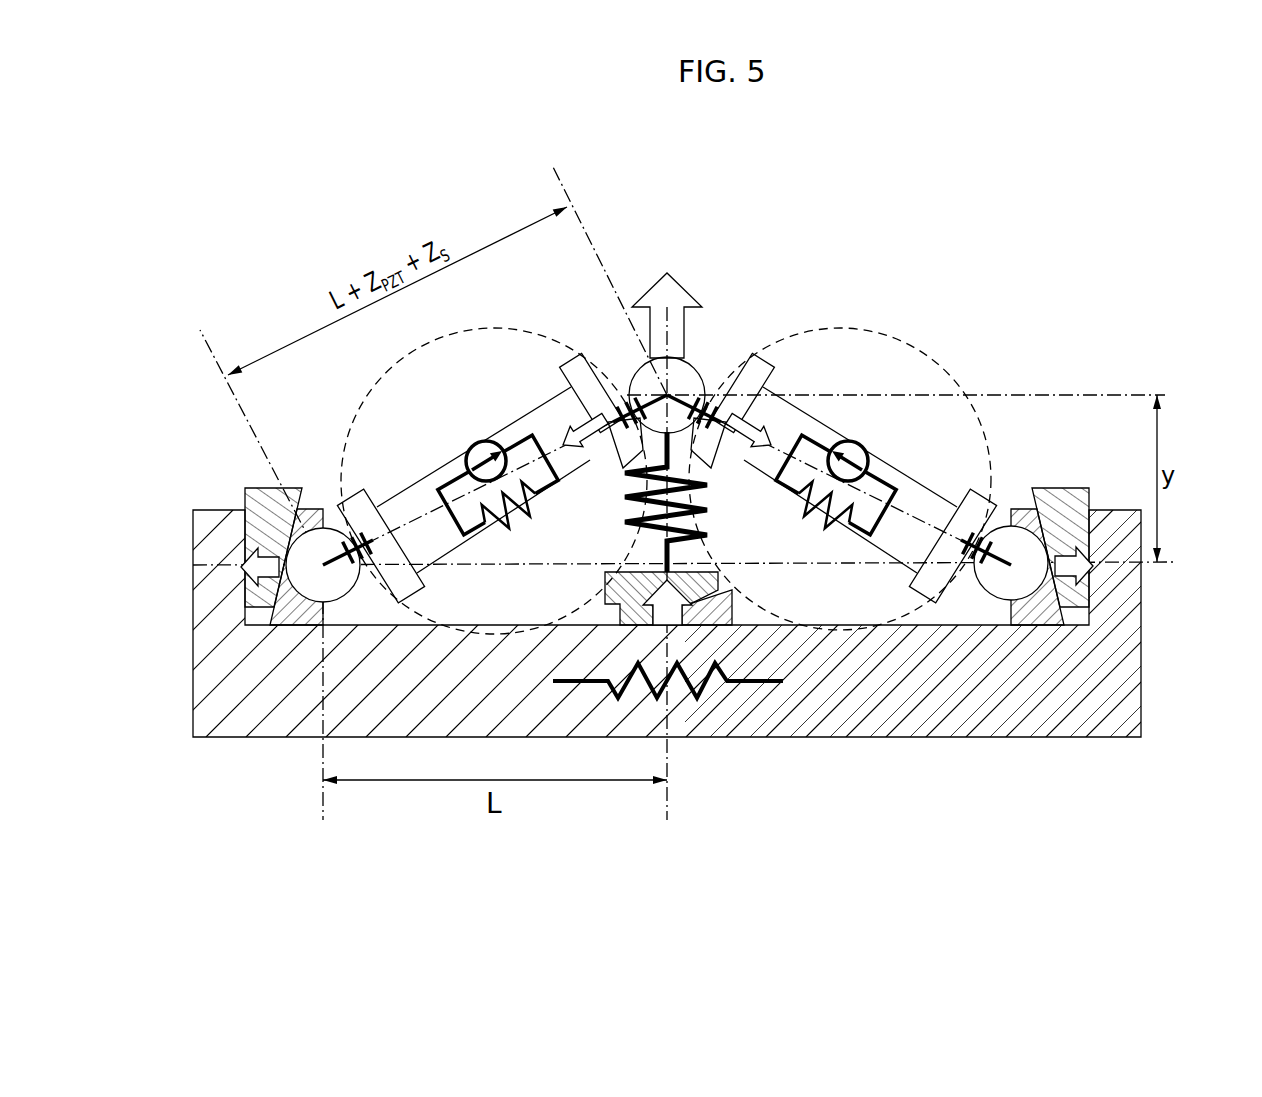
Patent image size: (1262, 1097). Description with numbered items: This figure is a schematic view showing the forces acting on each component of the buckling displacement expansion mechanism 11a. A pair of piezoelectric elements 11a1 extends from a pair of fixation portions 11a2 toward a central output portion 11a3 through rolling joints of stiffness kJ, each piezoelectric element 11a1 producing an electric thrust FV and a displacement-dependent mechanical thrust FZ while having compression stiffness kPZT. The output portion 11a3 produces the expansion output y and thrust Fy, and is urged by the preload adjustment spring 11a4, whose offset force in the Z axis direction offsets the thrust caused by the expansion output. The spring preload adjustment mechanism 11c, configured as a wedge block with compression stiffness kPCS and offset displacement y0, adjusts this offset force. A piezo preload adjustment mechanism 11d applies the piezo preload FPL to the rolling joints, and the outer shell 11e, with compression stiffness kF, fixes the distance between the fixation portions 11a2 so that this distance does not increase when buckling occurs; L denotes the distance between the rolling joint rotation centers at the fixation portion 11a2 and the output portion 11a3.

The buckling displacement expansion mechanism 11a is at (1080, 358).
The piezoelectric element 11a1 is at (418, 480).
The fixation portion 11a2 is at (304, 578).
The output portion 11a3 is at (690, 378).
The preload adjustment spring 11a4 is at (708, 534).
The spring preload adjustment mechanism 11c is at (742, 621).
The piezo preload adjustment mechanism 11d is at (260, 628).
The outer shell 11e is at (1108, 683).